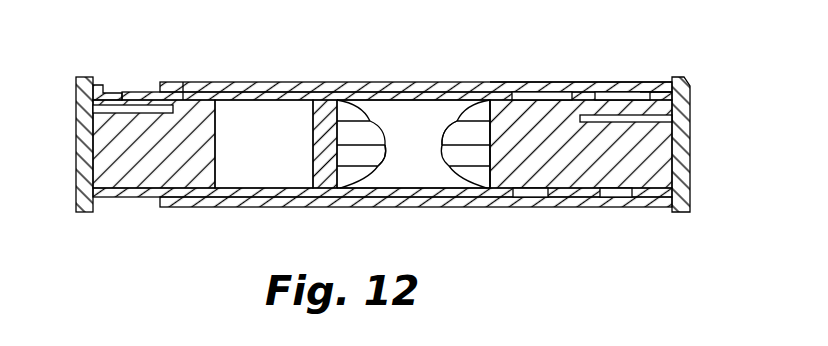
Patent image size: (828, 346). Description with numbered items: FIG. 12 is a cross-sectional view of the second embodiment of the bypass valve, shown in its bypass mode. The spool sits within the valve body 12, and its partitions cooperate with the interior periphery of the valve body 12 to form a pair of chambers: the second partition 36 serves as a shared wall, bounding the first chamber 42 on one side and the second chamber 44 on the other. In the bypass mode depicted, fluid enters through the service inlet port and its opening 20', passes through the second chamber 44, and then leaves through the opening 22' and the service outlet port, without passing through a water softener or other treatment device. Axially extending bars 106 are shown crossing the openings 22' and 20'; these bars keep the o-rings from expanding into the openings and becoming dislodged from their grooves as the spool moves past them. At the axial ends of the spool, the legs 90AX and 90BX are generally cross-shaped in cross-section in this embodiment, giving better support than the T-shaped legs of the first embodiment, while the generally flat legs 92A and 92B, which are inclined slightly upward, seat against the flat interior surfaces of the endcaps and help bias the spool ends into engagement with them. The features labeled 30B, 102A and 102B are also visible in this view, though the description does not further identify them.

The valve body 12 is at (406, 84).
The opening 20' is at (465, 179).
The opening 22' is at (344, 179).
The housing flange 30B is at (690, 100).
The second partition 36 is at (323, 117).
The first chamber 42 is at (272, 162).
The second chamber 44 is at (422, 162).
The leg 90AX is at (130, 160).
The leg 90BX is at (622, 157).
The generally flat leg 92A is at (138, 108).
The generally flat leg 92B is at (596, 108).
The step 102A is at (102, 88).
The step 102B is at (657, 85).
The axially extending bars 106 is at (478, 102).